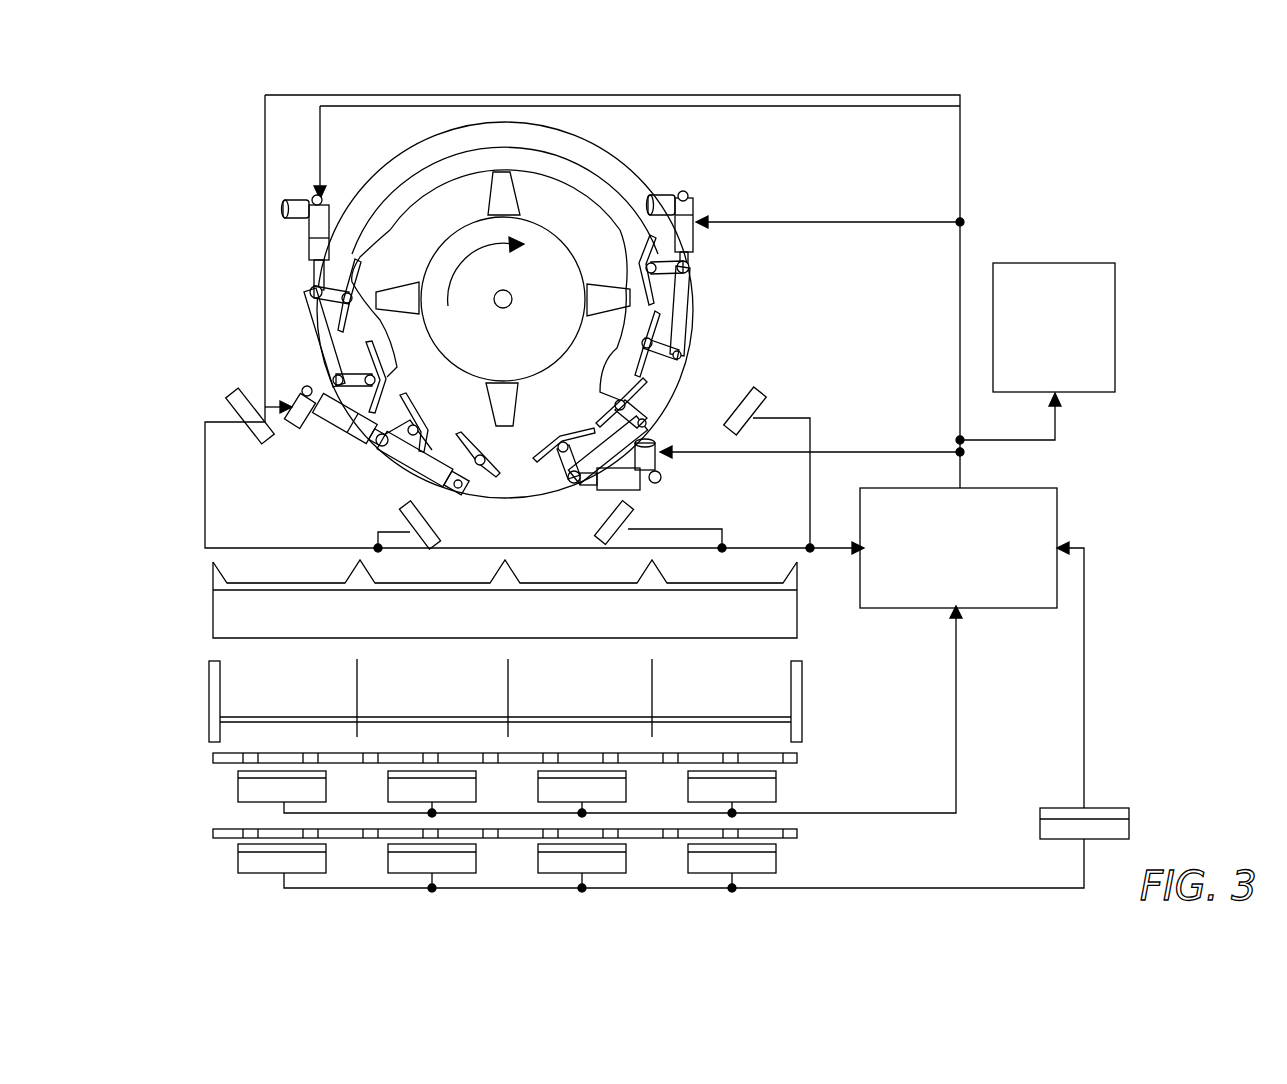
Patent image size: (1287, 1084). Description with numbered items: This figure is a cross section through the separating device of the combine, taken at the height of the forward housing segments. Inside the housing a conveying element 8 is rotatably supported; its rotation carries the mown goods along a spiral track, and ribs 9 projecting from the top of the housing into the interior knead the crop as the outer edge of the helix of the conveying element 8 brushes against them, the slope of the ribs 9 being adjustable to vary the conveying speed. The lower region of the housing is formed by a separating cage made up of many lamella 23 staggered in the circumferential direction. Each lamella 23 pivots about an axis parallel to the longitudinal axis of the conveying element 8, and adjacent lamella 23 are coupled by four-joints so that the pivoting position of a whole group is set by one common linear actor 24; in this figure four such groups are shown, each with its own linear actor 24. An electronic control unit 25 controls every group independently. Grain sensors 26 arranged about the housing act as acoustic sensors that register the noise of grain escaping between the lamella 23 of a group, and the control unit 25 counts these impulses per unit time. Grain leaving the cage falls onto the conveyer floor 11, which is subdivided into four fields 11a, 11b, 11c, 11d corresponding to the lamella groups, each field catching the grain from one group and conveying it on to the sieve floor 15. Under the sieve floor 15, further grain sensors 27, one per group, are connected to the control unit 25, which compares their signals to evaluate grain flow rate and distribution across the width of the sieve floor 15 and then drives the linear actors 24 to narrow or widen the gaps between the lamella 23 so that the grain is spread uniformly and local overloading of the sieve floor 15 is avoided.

The conveying element 8 is at (552, 312).
The ribs 9 is at (580, 190).
The conveyer floor 11 is at (469, 570).
The field 11a is at (296, 577).
The field 11b is at (437, 567).
The field 11c is at (562, 560).
The field 11d is at (740, 567).
The sieve floor 15 is at (213, 757).
The lamella 23 is at (408, 404).
The linear actor 24 is at (312, 240).
The electronic control unit 25 is at (972, 560).
The grain sensors 26 is at (252, 398).
The grain sensors 27 is at (238, 792).